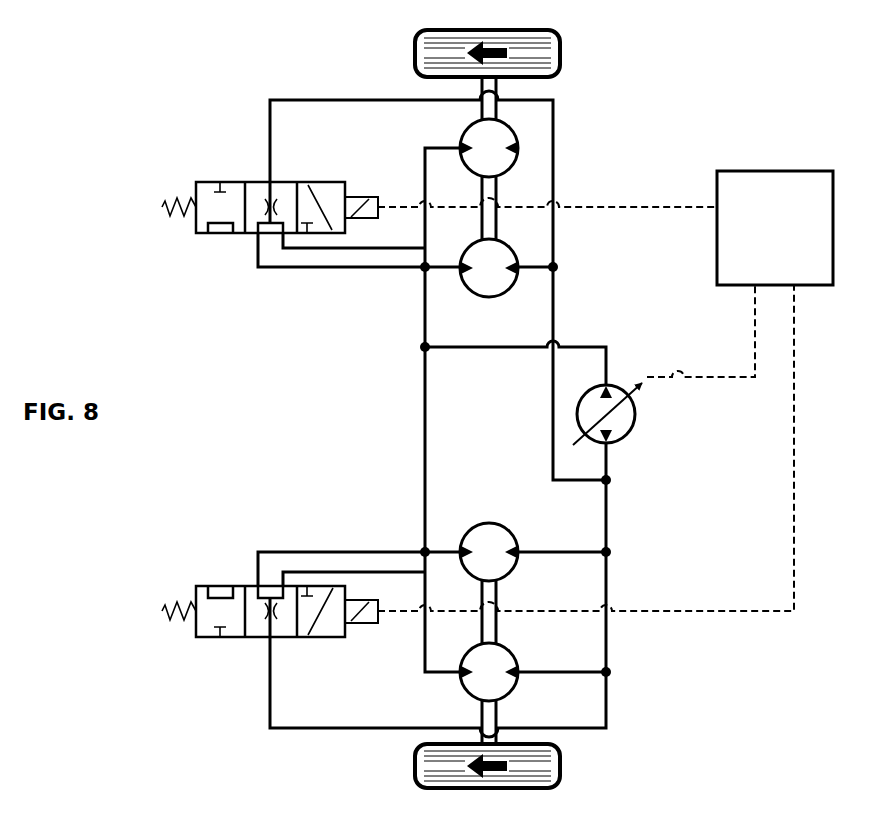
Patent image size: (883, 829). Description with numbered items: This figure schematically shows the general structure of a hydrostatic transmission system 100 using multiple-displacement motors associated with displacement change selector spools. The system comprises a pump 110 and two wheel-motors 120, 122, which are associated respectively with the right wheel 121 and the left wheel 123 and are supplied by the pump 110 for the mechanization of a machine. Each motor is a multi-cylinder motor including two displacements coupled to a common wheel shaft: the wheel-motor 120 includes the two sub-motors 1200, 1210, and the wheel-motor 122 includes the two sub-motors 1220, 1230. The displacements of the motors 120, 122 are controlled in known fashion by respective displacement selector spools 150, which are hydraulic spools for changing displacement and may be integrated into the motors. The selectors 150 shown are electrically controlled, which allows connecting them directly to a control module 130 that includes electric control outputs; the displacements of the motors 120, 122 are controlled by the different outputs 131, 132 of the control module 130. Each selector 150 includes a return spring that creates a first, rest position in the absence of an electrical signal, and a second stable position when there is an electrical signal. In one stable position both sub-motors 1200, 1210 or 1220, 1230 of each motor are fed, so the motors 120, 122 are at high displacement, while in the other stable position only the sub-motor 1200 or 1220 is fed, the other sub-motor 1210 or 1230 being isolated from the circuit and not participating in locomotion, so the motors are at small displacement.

The hydrostatic transmission system 100 is at (409, 455).
The pump 110 is at (644, 428).
The wheel-motor 120 is at (508, 224).
The sub-motor 1200 is at (462, 300).
The sub-motor 1210 is at (461, 128).
The right wheel 121 is at (567, 53).
The wheel-motor 122 is at (524, 626).
The sub-motor 1220 is at (489, 507).
The sub-motor 1230 is at (462, 703).
The left wheel 123 is at (567, 766).
The control module 130 is at (762, 237).
The output 131 is at (663, 204).
The output 132 is at (795, 476).
The displacement selector spool 150 is at (241, 163).